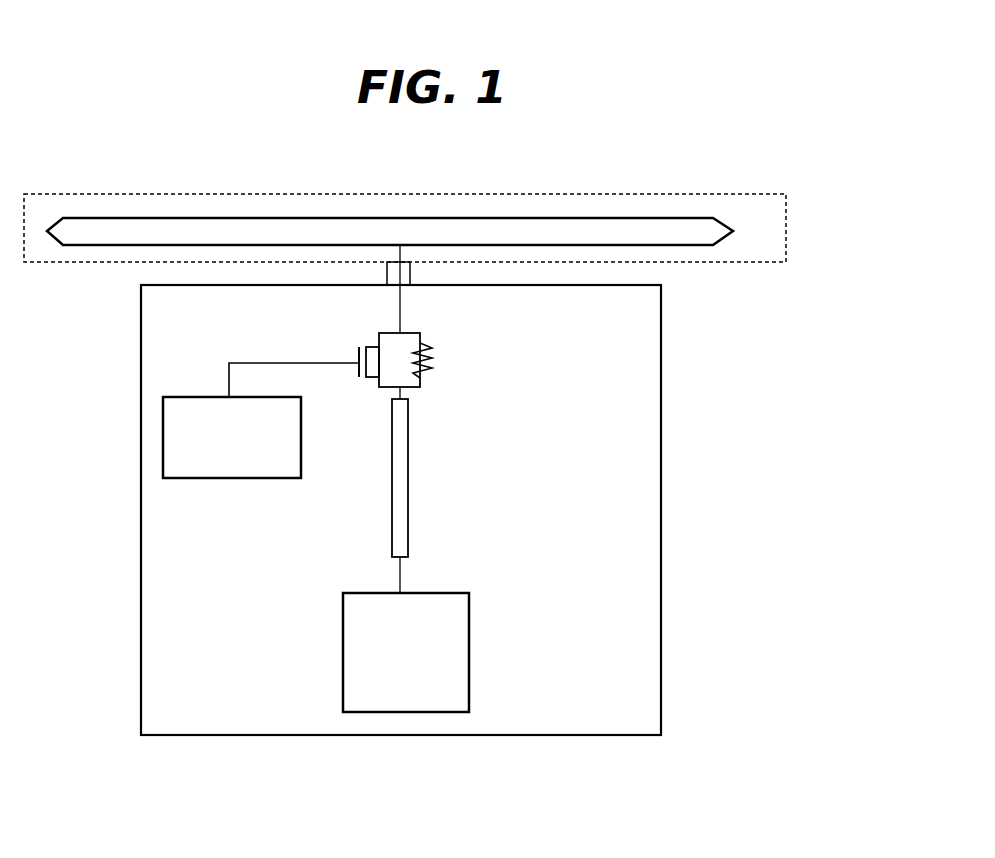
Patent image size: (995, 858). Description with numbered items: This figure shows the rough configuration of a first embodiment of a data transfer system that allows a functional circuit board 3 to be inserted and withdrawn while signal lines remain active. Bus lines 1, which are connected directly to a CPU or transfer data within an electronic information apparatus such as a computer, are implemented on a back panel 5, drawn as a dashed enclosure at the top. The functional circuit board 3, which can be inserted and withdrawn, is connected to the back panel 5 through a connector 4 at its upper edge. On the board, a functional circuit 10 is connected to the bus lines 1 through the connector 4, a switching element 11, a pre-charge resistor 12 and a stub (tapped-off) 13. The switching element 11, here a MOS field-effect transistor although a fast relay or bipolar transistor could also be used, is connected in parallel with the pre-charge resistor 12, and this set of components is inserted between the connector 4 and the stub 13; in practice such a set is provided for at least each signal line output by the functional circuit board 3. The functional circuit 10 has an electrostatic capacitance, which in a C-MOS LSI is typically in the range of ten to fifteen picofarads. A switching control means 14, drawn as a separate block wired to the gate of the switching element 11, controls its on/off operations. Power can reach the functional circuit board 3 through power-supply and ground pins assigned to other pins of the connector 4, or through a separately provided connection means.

The bus lines 1 is at (133, 246).
The functional circuit board 3 is at (661, 453).
The connector 4 is at (410, 280).
The back panel 5 is at (786, 240).
The functional circuit 10 is at (469, 622).
The switching element 11 is at (373, 347).
The pre-charge resistor 12 is at (432, 348).
The stub (tapped-off) 13 is at (404, 487).
The switching control means 14 is at (176, 397).